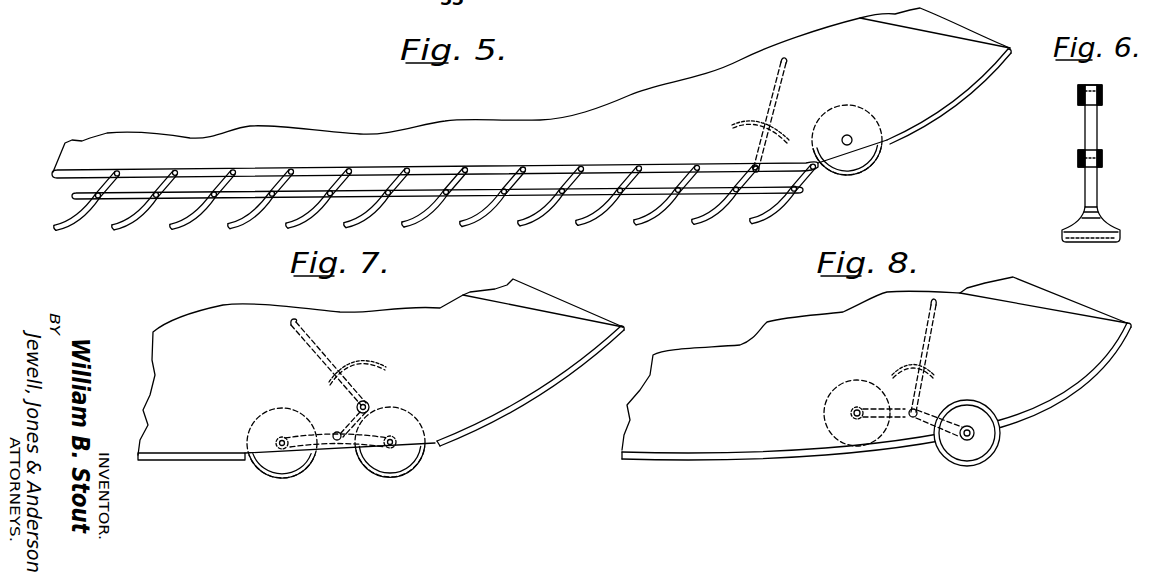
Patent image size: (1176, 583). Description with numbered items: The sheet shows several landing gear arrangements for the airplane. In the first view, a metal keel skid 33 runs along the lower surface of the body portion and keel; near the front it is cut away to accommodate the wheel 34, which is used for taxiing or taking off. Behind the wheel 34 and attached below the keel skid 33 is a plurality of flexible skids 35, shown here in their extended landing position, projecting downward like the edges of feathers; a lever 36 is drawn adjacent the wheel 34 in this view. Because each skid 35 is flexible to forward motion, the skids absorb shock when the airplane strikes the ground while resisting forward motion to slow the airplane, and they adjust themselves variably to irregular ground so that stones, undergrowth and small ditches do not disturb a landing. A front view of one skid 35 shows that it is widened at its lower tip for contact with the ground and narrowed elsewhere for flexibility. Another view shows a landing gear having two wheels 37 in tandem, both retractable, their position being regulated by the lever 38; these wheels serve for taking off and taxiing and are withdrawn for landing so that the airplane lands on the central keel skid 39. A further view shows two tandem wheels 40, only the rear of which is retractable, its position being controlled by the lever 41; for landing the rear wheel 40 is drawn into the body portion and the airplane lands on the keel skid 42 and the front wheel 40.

In FIG. 5, the keel skid 33 is at (653, 165).
In FIG. 5, the wheel 34 is at (878, 159).
In FIG. 5, the flexible skids 35 is at (492, 230).
In FIG. 6, the flexible skids 35 is at (1092, 191).
In FIG. 5, the operating lever 36 is at (776, 98).
In FIG. 7, the wheels 37 is at (290, 478).
In FIG. 7, the lever 38 is at (325, 354).
In FIG. 7, the central keel skid 39 is at (468, 437).
In FIG. 8, the wheels 40 is at (862, 449).
In FIG. 8, the lever 41 is at (926, 346).
In FIG. 8, the keel skid 42 is at (770, 455).